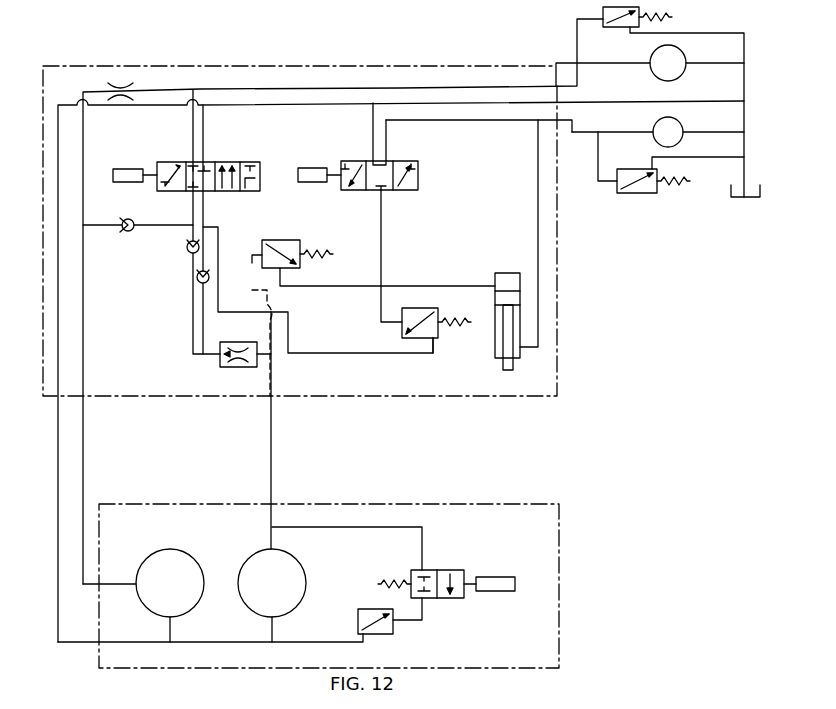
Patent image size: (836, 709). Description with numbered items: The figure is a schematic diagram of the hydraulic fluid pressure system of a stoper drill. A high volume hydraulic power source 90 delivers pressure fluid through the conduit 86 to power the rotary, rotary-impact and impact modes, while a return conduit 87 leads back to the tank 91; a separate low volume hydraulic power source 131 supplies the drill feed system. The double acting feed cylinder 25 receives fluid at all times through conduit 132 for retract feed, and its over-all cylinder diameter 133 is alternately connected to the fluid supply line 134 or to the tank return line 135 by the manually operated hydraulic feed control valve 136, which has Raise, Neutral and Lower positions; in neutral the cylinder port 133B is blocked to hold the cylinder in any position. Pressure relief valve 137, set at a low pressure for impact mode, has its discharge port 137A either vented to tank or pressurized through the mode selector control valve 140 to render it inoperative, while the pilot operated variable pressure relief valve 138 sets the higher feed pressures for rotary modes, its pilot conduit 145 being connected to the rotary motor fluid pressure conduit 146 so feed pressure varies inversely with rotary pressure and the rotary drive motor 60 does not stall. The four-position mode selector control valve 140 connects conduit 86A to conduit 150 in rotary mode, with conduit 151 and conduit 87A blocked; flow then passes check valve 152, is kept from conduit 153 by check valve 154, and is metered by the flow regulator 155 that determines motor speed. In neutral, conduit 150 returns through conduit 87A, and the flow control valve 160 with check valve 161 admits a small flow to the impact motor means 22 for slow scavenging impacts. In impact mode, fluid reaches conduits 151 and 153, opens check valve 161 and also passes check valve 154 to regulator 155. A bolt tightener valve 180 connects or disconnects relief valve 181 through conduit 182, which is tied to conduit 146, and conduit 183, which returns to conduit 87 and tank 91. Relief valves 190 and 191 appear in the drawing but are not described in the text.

The impact motor means 22 is at (170, 595).
The feed cylinder 25 is at (497, 335).
The rotary drive motor 60 is at (272, 595).
The conduit 86 is at (400, 87).
The conduit 86A is at (193, 135).
The return conduit 87 is at (58, 512).
The conduit 87A is at (203, 132).
The high volume hydraulic power source 90 is at (650, 65).
The tank 91 is at (731, 190).
The low volume hydraulic power source 131 is at (658, 132).
The conduit 132 is at (538, 232).
The over-all cylinder diameter 133 is at (505, 280).
The cylinder port 133B is at (385, 250).
The fluid supply line 134 is at (386, 128).
The tank return line 135 is at (372, 133).
The hydraulic feed control valve 136 is at (383, 196).
The pressure relief valve 137 is at (422, 315).
The discharge port 137A is at (434, 348).
The pilot operated variable pressure relief valve 138 is at (292, 264).
The mode selector control valve 140 is at (222, 163).
The pilot conduit 145 is at (254, 325).
The rotary motor fluid pressure conduit 146 is at (272, 437).
The conduit 150 is at (210, 224).
The conduit 151 is at (193, 222).
The check valve 152 is at (198, 282).
The conduit 153 is at (152, 230).
The check valve 154 is at (186, 252).
The variable volume pressure compensated flow regulator 155 is at (240, 368).
The flow control valve 160 is at (120, 88).
The check valve 161 is at (127, 218).
The bolt tightener valve 180 is at (457, 598).
The relief valve 181 is at (385, 634).
The conduit 182 is at (414, 527).
The conduit 183 is at (345, 640).
The relief valve 190 is at (633, 195).
The relief valve 191 is at (603, 18).